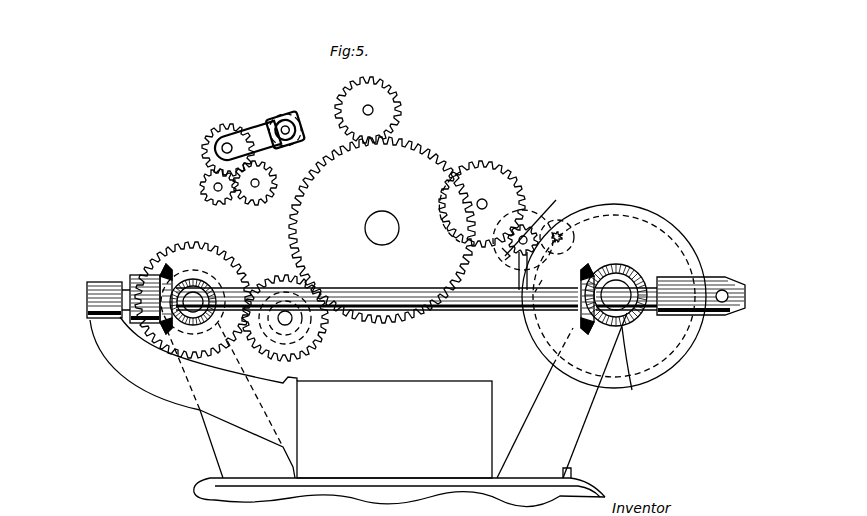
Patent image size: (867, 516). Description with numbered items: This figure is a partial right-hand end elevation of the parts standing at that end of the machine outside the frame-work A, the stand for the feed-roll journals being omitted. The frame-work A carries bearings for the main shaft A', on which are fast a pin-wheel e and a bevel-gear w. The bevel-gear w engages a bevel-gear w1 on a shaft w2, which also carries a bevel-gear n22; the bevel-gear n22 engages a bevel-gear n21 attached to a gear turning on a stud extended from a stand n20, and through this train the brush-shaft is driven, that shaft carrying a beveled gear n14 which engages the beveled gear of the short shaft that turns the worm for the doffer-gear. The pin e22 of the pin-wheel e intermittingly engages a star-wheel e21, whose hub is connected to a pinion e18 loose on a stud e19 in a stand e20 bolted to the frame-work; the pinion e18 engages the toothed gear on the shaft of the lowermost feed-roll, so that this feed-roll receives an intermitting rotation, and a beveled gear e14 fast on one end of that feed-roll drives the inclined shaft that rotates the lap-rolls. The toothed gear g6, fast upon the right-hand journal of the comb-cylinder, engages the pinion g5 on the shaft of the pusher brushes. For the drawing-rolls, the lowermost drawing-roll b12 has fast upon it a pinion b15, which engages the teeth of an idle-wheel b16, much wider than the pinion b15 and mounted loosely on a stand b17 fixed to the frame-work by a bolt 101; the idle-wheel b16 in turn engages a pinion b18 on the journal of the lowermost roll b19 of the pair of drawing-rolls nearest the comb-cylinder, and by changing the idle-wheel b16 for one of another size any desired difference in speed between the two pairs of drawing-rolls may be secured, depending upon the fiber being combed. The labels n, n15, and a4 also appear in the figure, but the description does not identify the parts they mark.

The frame-work A is at (358, 410).
The main shaft A' is at (632, 365).
The shaft w2 is at (416, 299).
The pin-wheel e is at (678, 343).
The bevel-gear w is at (632, 263).
The bevel-gear w1 is at (603, 312).
The bevel-gear n22 is at (160, 275).
The bevel-gear n21 is at (215, 278).
The frame arm n is at (147, 348).
The stand n20 is at (220, 360).
The beveled gear n14 is at (320, 347).
The shaft n15 is at (286, 318).
The toothed gear g6 is at (382, 230).
The shaft a4 is at (372, 228).
The pinion g5 is at (387, 108).
The beveled gear e14 is at (512, 188).
The pinion e18 is at (515, 236).
The pin e22 is at (565, 238).
The star-wheel e21 is at (502, 253).
The stud e19 is at (540, 230).
The stand e20 is at (520, 265).
The idle-wheel b16 is at (212, 143).
The stand b17 is at (258, 133).
The bolt 101 is at (287, 123).
The pinion b18 is at (285, 158).
The pinion b15 is at (205, 188).
The lowermost drawing-roll b12 is at (216, 189).
The lowermost drawing-roll b19 is at (255, 187).